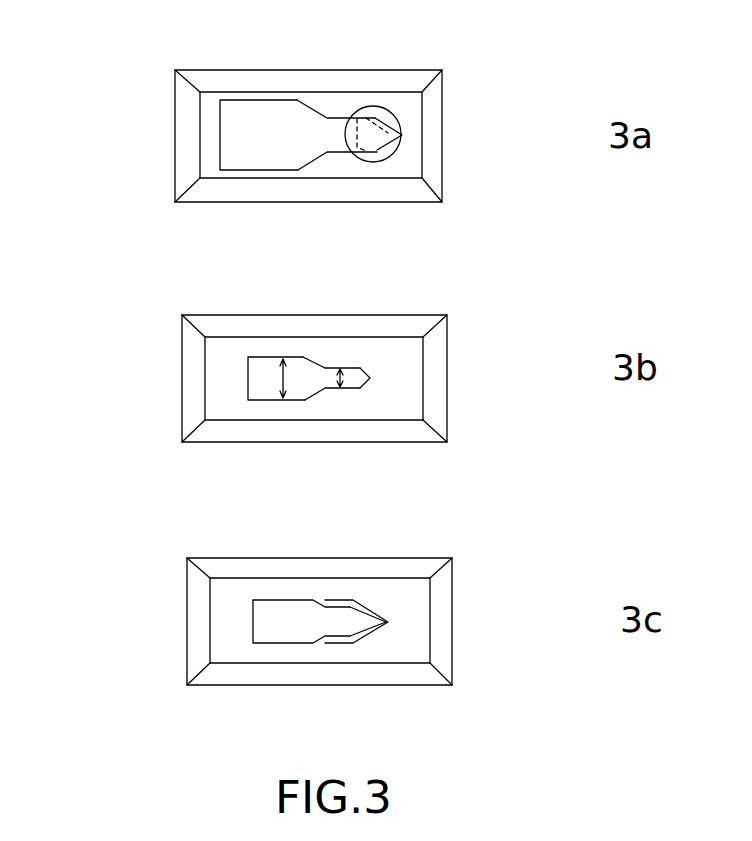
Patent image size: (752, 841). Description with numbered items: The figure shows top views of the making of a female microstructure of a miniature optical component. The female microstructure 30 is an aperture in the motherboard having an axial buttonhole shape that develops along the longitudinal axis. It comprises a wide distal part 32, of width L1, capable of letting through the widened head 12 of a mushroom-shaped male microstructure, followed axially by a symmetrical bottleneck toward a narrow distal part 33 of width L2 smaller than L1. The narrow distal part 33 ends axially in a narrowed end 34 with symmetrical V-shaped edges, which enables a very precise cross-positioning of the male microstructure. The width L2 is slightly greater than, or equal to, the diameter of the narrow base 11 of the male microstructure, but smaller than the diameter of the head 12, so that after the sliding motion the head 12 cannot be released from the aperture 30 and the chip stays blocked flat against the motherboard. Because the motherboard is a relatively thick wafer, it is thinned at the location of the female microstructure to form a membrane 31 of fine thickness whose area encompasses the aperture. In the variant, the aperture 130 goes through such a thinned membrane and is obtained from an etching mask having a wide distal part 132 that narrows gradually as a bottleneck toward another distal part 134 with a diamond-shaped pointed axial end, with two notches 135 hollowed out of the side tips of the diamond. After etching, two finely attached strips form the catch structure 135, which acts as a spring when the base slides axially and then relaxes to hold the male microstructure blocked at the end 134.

In FIG. 3a, the narrow base 11 is at (345, 117).
In FIG. 3a, the widened head 12 is at (400, 120).
In FIG. 3b, the female microstructure 30 is at (243, 377).
In FIG. 3a, the membrane 31 is at (210, 122).
In FIG. 3b, the membrane 31 is at (263, 412).
In FIG. 3a, the wide distal part 32 is at (248, 110).
In FIG. 3b, the wide distal part 32 is at (253, 357).
In FIG. 3a, the narrow distal part 33 is at (340, 152).
In FIG. 3b, the narrow distal part 33 is at (350, 390).
In FIG. 3a, the narrowed end 34 is at (398, 143).
In FIG. 3b, the narrowed end 34 is at (370, 378).
In FIG. 3c, the female microstructure aperture 130 is at (253, 618).
In FIG. 3c, the wide distal part 132 is at (270, 643).
In FIG. 3c, the distal part with pointed end 134 is at (383, 622).
In FIG. 3c, the catch structure 135 is at (387, 622).